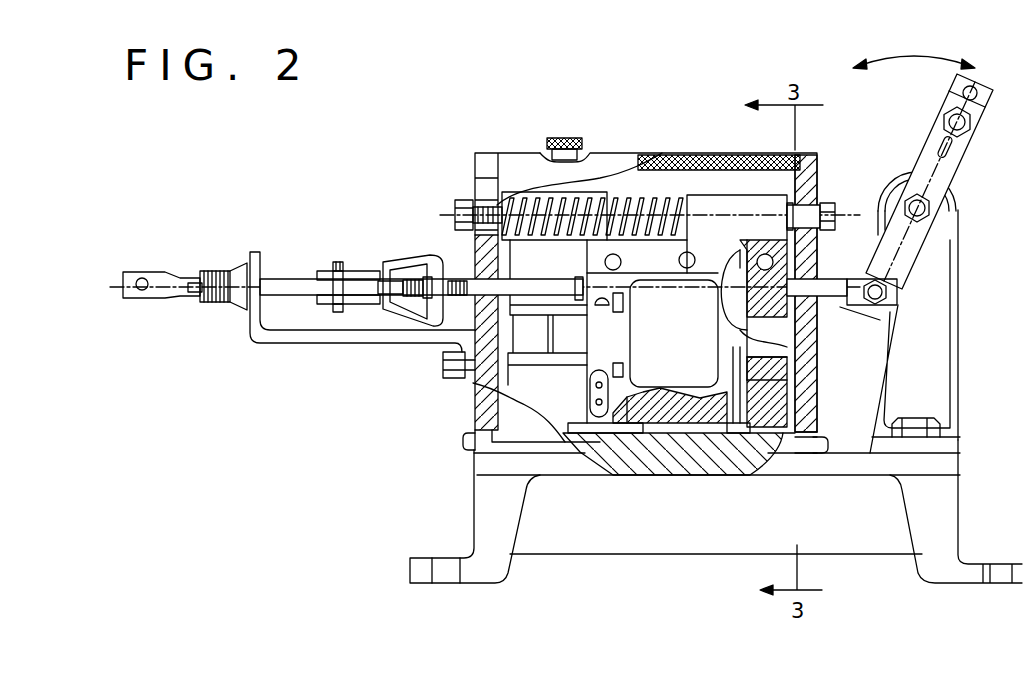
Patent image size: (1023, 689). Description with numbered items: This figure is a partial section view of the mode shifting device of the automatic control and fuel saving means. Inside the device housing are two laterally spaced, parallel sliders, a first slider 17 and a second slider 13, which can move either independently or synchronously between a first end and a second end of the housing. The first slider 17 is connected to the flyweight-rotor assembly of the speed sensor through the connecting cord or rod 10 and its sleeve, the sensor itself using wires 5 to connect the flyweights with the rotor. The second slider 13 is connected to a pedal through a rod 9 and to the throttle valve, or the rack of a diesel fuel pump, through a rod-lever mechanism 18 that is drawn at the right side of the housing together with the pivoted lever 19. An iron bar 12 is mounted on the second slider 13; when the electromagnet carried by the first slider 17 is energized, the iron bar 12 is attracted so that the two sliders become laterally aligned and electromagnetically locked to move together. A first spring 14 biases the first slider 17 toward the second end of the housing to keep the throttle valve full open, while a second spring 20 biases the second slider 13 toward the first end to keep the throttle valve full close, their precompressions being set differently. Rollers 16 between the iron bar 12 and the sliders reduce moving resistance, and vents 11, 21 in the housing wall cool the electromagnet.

The wires 5 is at (707, 268).
The rod 9 is at (165, 293).
The connecting cord or rod 10 is at (295, 279).
The vent 11 is at (480, 252).
The iron bar 12 is at (507, 390).
The second slider 13 is at (515, 412).
The first spring 14 is at (593, 200).
The rollers 16 is at (740, 420).
The first slider 17 is at (780, 403).
The rod-lever mechanism 18 is at (837, 295).
The lever 19 is at (947, 175).
The second spring 20 is at (657, 170).
The vent 21 is at (822, 383).